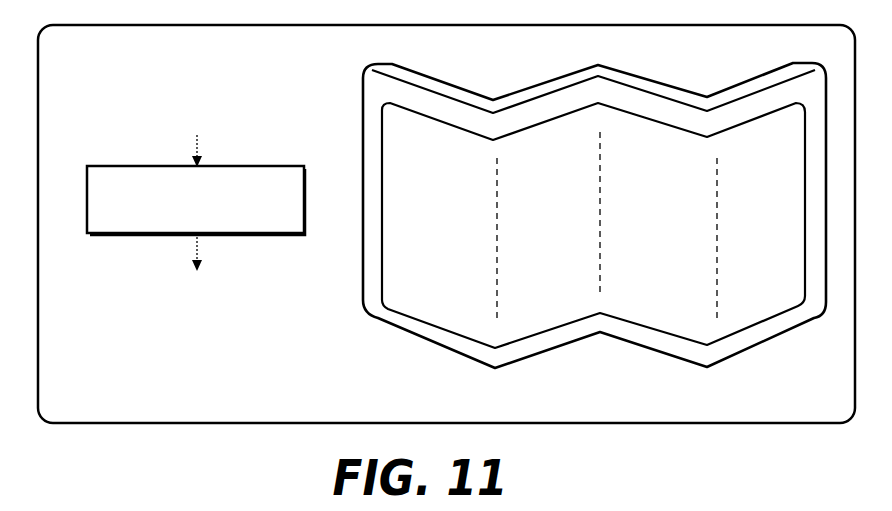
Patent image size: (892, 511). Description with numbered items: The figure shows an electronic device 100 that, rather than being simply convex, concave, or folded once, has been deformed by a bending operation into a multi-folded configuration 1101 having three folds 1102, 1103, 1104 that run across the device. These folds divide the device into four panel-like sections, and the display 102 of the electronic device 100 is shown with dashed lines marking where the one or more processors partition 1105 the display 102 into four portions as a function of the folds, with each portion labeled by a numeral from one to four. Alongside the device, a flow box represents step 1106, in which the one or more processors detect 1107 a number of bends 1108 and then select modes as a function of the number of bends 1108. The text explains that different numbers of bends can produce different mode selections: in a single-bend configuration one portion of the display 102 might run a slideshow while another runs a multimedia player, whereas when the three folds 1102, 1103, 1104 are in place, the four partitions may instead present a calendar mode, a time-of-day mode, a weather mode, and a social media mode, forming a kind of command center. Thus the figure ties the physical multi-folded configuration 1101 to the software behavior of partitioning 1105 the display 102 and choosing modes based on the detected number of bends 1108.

The electronic device 100 is at (340, 119).
The display 102 is at (382, 241).
The multi-folded configuration 1101 is at (746, 367).
The fold 1102 is at (494, 89).
The fold 1103 is at (599, 54).
The fold 1104 is at (708, 86).
The partition 1105 is at (717, 287).
The step 1106 is at (100, 166).
The detect 1107 is at (158, 177).
The number of bends 1108 is at (225, 180).